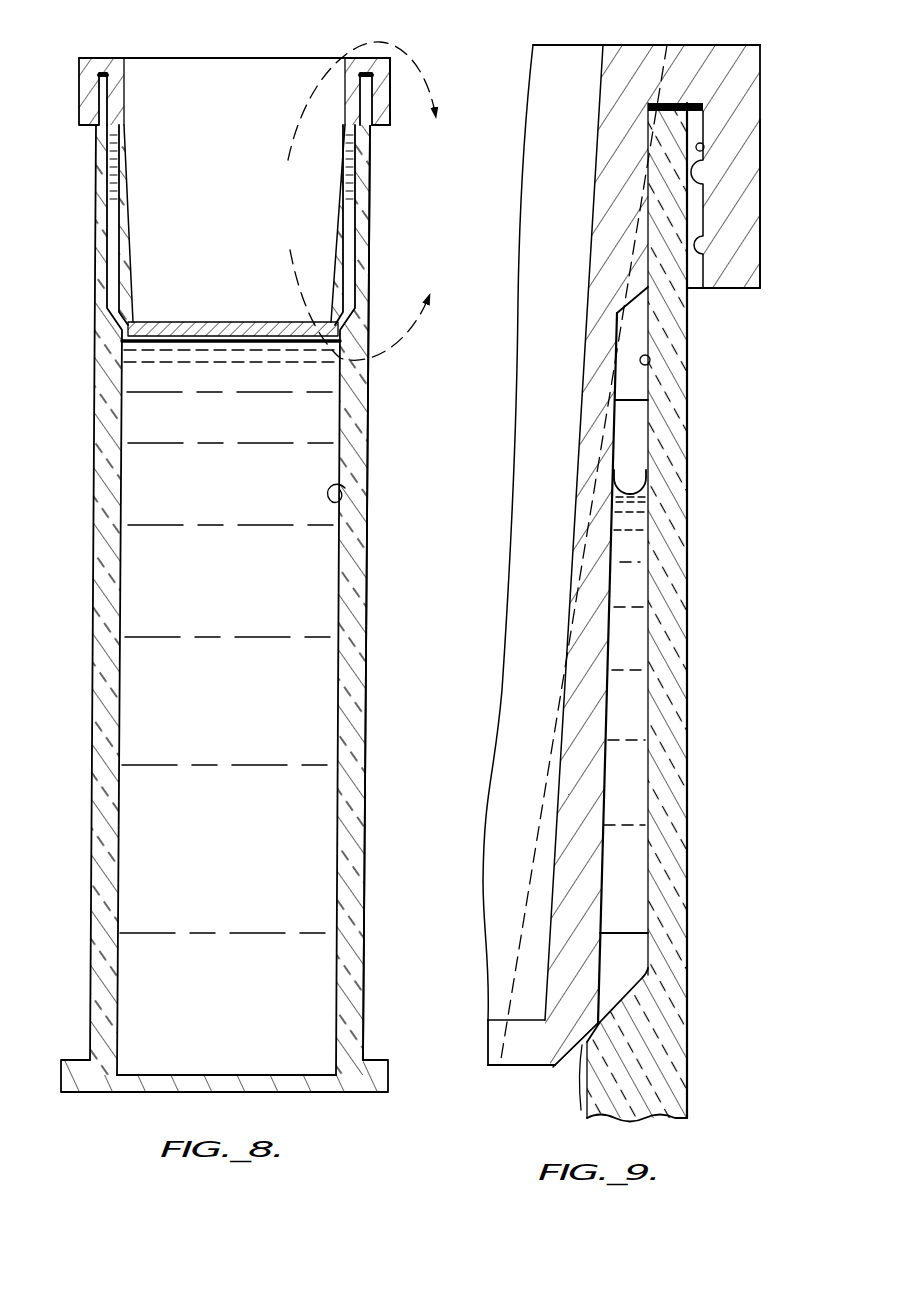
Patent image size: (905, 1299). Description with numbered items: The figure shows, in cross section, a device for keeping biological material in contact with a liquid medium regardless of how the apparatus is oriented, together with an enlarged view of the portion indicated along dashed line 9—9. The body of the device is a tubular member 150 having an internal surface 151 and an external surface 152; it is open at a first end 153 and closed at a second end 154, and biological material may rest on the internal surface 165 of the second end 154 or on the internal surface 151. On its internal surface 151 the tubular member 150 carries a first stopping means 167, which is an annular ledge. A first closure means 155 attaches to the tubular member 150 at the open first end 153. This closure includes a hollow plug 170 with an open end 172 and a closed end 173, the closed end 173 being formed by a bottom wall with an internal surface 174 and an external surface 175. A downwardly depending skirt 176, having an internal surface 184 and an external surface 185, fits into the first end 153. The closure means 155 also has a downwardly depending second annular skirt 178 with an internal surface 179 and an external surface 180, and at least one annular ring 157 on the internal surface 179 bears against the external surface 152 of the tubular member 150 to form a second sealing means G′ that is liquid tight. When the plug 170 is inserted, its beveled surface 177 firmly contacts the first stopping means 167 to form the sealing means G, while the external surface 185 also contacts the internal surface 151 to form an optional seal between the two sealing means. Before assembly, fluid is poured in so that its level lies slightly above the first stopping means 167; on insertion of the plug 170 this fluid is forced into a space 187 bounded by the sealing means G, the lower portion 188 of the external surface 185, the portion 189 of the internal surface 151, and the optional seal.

In FIG. 8, the tubular member 150 is at (370, 632).
In FIG. 8, the internal surface 151 is at (345, 488).
In FIG. 9, the internal surface 151 is at (651, 362).
In FIG. 8, the external surface 152 is at (368, 537).
In FIG. 9, the external surface 152 is at (692, 115).
In FIG. 8, the first end 153 is at (193, 46).
In FIG. 8, the second end 154 is at (310, 1093).
In FIG. 8, the first closure means 155 is at (306, 50).
In FIG. 9, the first closure means 155 is at (676, 42).
In FIG. 9, the annular ring 157 is at (703, 178).
In FIG. 8, the internal surface 165 is at (187, 1075).
In FIG. 9, the first stopping means 167 is at (643, 978).
In FIG. 8, the plug 170 is at (117, 54).
In FIG. 9, the plug 170 is at (592, 662).
In FIG. 8, the open end 172 is at (270, 75).
In FIG. 9, the open end 172 is at (560, 60).
In FIG. 8, the closed end 173 is at (248, 348).
In FIG. 9, the closed end 173 is at (510, 1070).
In FIG. 8, the internal surface 174 is at (197, 322).
In FIG. 9, the internal surface 174 is at (507, 1020).
In FIG. 8, the external surface 175 is at (222, 345).
In FIG. 9, the external surface 175 is at (538, 1068).
In FIG. 8, the skirt 176 is at (343, 228).
In FIG. 9, the skirt 176 is at (602, 553).
In FIG. 9, the beveled surface 177 is at (577, 1108).
In FIG. 8, the second annular skirt 178 is at (394, 80).
In FIG. 9, the second annular skirt 178 is at (766, 124).
In FIG. 9, the internal surface 179 is at (705, 148).
In FIG. 9, the external surface 180 is at (762, 208).
In FIG. 8, the internal surface 184 is at (340, 172).
In FIG. 9, the internal surface 184 is at (562, 726).
In FIG. 8, the external surface 185 is at (355, 175).
In FIG. 9, the external surface 185 is at (620, 400).
In FIG. 9, the space 187 is at (634, 436).
In FIG. 9, the lower portion 188 is at (608, 800).
In FIG. 9, the portion 189 is at (660, 597).
In FIG. 8, the dashed line 9— 9 is at (365, 201).
In FIG. 9, the sealing means G is at (596, 1036).
In FIG. 9, the second sealing means G′ is at (696, 249).